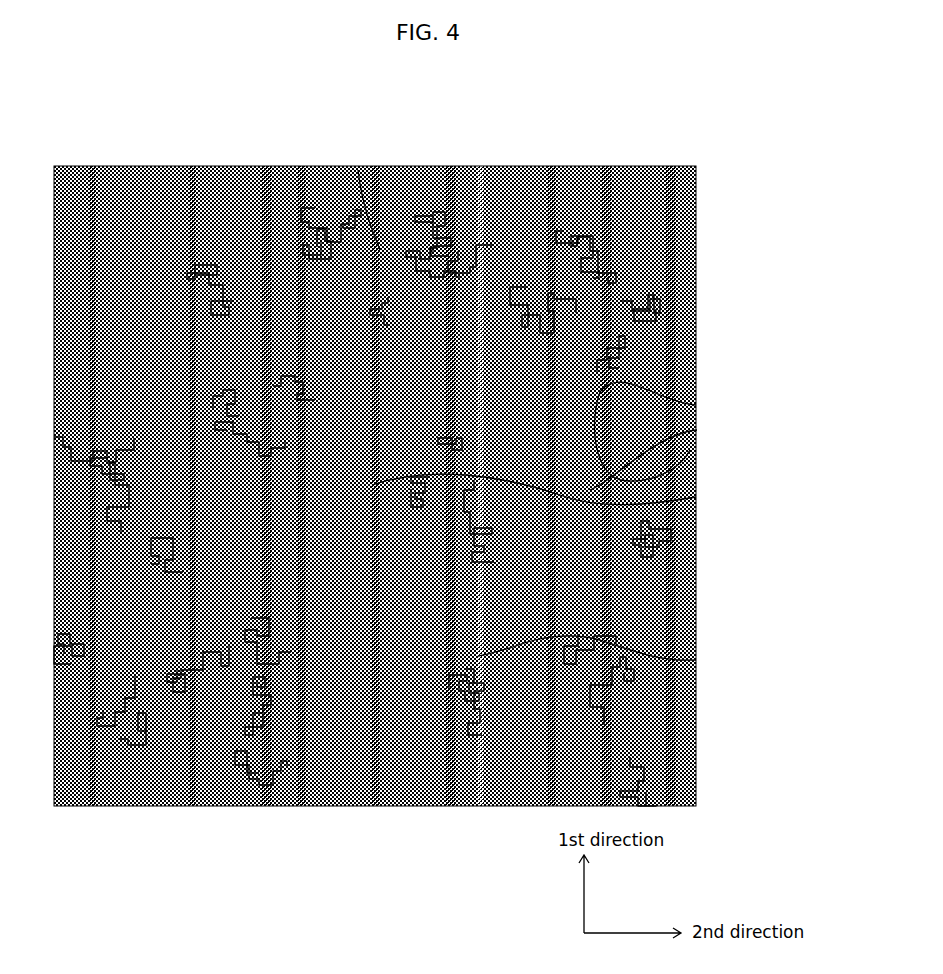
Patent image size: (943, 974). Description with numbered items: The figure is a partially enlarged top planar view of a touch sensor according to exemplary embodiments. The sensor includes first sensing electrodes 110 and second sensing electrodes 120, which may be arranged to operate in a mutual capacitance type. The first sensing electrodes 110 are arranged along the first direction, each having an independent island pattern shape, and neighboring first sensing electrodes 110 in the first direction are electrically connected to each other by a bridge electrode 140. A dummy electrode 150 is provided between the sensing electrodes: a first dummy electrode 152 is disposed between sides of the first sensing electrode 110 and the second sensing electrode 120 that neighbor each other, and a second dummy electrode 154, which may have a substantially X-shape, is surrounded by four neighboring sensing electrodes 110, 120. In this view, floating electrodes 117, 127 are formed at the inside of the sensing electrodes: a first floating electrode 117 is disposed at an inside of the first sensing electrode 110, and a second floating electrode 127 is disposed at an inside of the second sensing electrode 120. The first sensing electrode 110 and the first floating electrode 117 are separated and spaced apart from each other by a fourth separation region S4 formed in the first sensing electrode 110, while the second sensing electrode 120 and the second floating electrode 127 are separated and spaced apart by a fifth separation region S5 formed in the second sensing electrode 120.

The first sensing electrode 110 is at (580, 762).
The second sensing electrode 120 is at (645, 262).
The second floating electrode 127 is at (358, 170).
The first floating electrode 117 is at (697, 430).
The bridge electrode 140 is at (696, 660).
The dummy electrode 150 is at (596, 443).
The first dummy electrode 152 is at (696, 405).
The second dummy electrode 154 is at (696, 497).
The fourth separation region S4 is at (600, 528).
The fifth separation region S5 is at (400, 239).